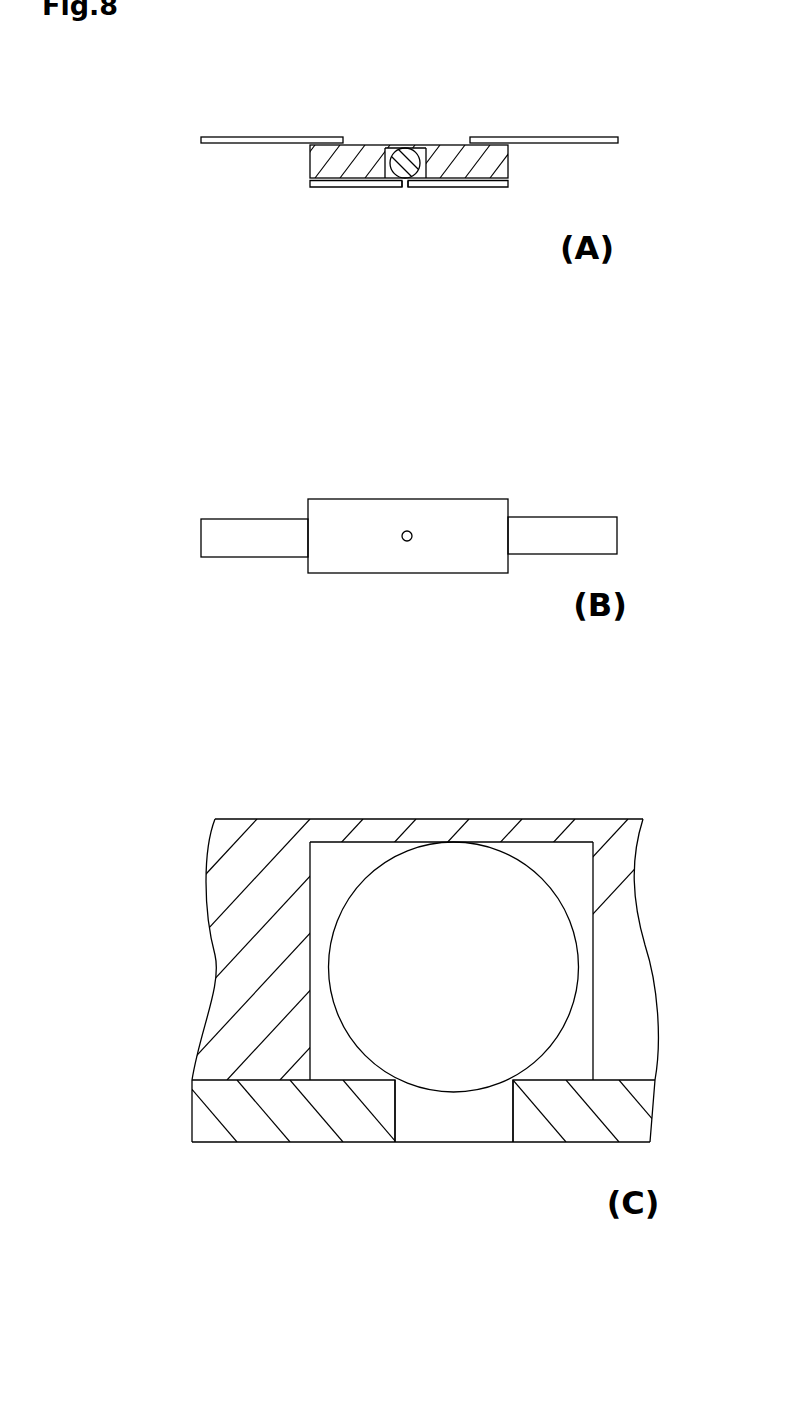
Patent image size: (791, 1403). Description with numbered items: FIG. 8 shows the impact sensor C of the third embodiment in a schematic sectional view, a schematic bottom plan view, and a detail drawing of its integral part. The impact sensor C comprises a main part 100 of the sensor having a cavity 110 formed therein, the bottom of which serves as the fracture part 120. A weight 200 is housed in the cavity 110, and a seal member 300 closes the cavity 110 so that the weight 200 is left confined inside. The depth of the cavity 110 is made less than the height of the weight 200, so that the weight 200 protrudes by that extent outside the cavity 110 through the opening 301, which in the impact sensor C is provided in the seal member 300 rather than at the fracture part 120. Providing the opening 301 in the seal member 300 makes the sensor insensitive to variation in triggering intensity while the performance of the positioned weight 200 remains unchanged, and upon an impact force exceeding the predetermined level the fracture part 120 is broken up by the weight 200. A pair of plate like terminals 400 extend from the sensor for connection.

The main part of sensor 100 is at (508, 158).
The cavity 110 is at (388, 180).
The fracture part 120 is at (417, 147).
The weight 200 is at (390, 147).
The seal member 300 is at (318, 190).
The opening 301 is at (404, 188).
The plate like terminals 400 is at (218, 138).
The impact sensor C is at (490, 122).